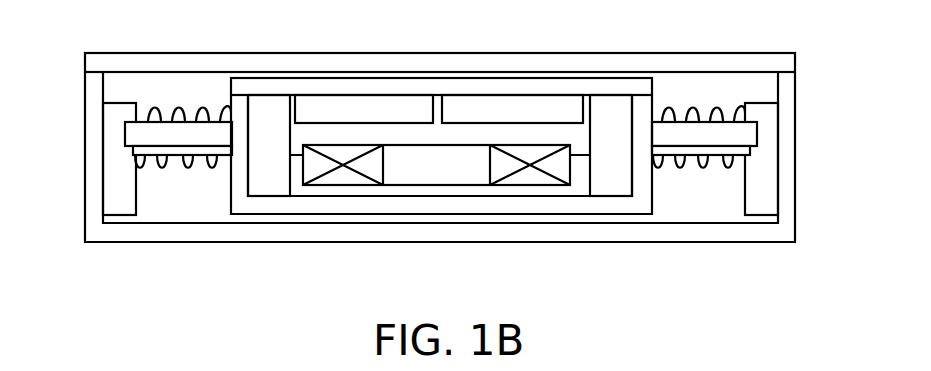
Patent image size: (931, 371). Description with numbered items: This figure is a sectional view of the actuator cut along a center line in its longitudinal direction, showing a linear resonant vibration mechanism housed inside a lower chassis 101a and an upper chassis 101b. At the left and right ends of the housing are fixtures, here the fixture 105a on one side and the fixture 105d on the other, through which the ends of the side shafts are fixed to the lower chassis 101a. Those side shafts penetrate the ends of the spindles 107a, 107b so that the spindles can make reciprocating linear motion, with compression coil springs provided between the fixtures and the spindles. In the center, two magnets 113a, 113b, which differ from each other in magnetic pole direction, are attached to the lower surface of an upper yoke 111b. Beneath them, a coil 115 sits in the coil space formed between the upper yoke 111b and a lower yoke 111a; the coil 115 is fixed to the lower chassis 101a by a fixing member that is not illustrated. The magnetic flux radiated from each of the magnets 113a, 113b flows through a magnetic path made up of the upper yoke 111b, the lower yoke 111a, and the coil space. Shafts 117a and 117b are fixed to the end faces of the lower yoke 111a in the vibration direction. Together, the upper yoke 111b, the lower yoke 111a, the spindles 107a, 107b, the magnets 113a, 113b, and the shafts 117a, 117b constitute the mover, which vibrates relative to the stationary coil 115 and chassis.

The lower chassis 101a is at (790, 192).
The upper chassis 101b is at (550, 70).
The fixture 105a is at (108, 148).
The fixture 105d is at (768, 130).
The spindle 107a is at (267, 103).
The spindle 107b is at (608, 105).
The lower yoke 111a is at (370, 205).
The upper yoke 111b is at (328, 88).
The magnet 113a is at (388, 101).
The magnet 113b is at (473, 105).
The coil 115 is at (457, 187).
The shaft 117a is at (150, 135).
The shaft 117b is at (678, 135).